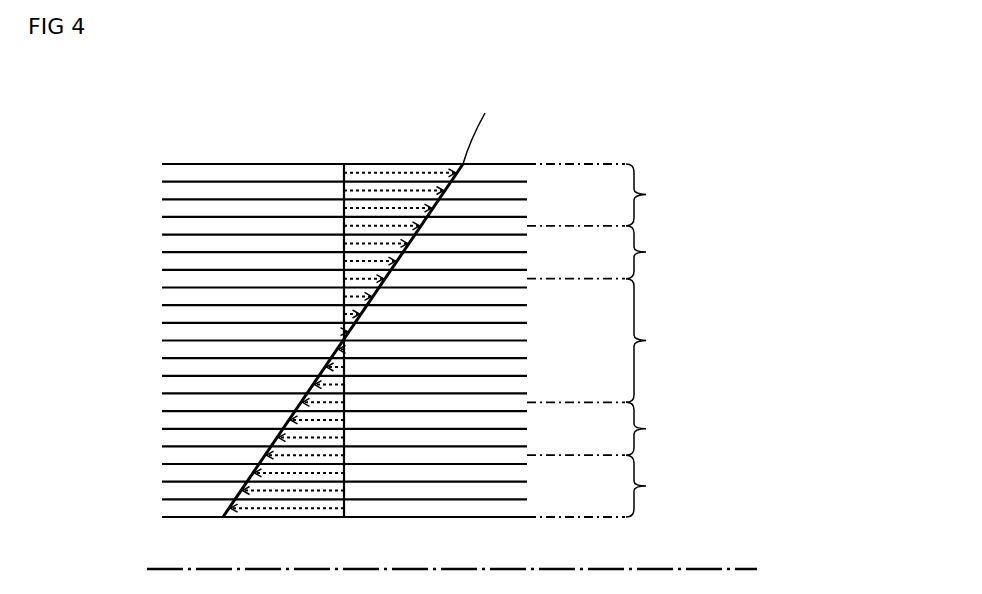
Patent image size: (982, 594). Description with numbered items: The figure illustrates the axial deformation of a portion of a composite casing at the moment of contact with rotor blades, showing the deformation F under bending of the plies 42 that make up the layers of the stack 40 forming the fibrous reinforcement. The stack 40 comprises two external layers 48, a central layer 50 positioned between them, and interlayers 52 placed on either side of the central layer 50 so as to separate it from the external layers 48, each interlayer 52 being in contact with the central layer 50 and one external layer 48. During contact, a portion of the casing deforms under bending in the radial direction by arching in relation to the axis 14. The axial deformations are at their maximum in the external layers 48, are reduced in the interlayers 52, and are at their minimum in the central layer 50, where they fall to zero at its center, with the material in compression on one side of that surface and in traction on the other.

The stack 40 is at (335, 126).
The plies 42 is at (281, 218).
The external layers 48 is at (602, 340).
The interlayers 52 is at (602, 340).
The central layer 50 is at (652, 341).
The axis 14 is at (730, 568).